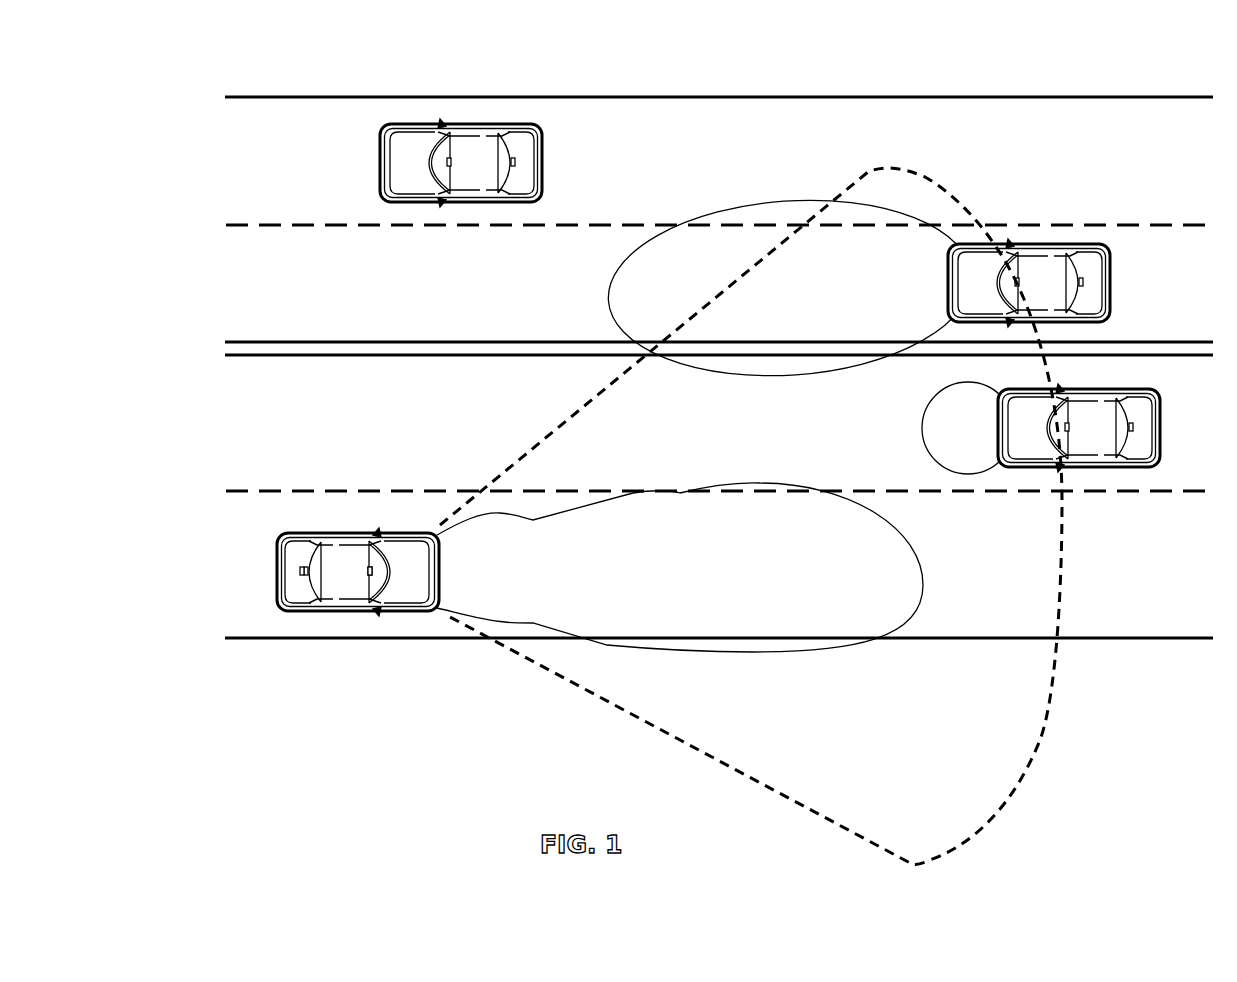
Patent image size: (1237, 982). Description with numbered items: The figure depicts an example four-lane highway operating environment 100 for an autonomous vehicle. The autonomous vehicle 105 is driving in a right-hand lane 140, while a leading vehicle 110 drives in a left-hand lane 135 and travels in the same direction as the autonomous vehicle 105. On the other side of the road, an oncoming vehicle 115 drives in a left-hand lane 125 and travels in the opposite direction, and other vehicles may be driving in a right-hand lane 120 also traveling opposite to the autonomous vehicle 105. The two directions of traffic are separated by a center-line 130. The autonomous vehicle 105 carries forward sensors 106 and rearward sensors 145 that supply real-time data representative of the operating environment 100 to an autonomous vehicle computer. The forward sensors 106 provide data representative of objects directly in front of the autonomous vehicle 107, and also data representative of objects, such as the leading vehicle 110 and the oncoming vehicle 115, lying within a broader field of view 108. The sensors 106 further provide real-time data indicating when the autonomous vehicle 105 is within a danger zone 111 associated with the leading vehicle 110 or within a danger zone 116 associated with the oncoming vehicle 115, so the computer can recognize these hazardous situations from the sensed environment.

The operating environment 100 is at (880, 74).
The autonomous vehicle 105 is at (353, 582).
The forward sensor 106 is at (375, 578).
The region directly in front of the autonomous vehicle 107 is at (517, 626).
The broader field of view 108 is at (683, 743).
The leading vehicle 110 is at (1108, 407).
The danger zone 111 is at (972, 474).
The oncoming vehicle 115 is at (1066, 292).
The danger zone 116 is at (908, 225).
The right-hand lane 120 is at (1106, 94).
The left-hand lane 125 is at (1152, 223).
The center-line 130 is at (1178, 351).
The left-hand lane 135 is at (1148, 493).
The right-hand lane 140 is at (1139, 640).
The rearward sensor 145 is at (299, 573).